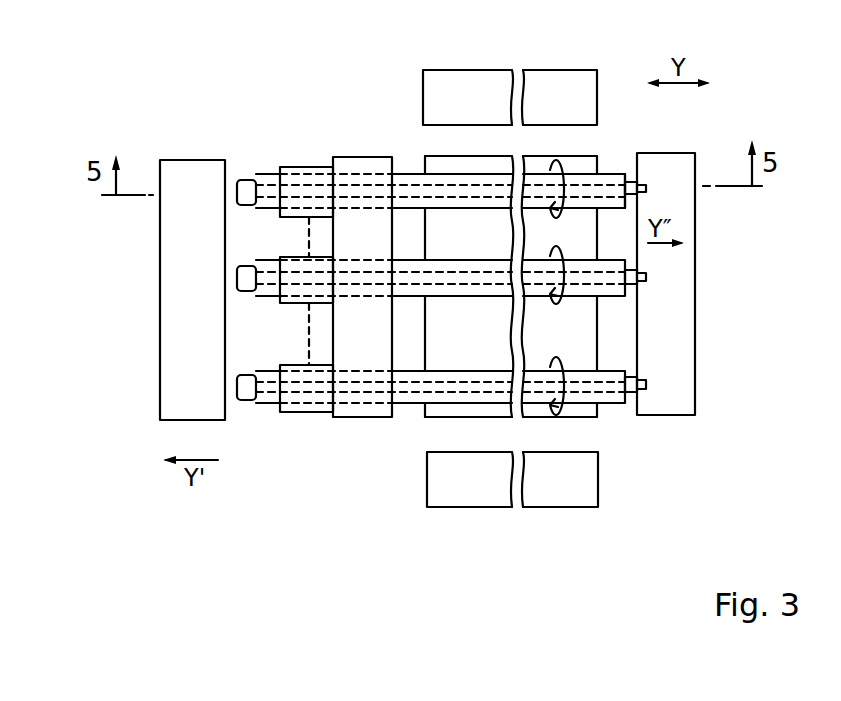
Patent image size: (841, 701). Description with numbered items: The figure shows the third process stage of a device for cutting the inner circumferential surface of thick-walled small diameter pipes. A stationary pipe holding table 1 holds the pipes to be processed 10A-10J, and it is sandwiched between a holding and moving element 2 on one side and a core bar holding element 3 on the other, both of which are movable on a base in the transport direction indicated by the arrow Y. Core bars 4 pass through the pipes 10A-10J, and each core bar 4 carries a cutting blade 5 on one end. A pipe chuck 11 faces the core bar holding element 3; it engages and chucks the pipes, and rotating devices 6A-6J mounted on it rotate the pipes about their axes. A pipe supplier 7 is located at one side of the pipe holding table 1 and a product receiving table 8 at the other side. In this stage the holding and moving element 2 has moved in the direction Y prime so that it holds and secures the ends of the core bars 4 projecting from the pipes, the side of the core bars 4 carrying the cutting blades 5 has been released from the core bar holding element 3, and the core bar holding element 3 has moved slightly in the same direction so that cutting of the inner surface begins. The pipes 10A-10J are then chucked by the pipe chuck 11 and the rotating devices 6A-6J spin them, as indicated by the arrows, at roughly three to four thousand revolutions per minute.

The pipe holding table 1 is at (568, 159).
The holding and moving element 2 is at (670, 157).
The core bar holding element 3 is at (180, 172).
The core bar 4 is at (629, 180).
The cutting blade 5 is at (243, 181).
The rotating device 6A is at (298, 168).
The rotating device 6J is at (290, 366).
The pipe supplier 7 is at (455, 80).
The product receiving table 8 is at (442, 487).
The pipe to be processed 10A is at (612, 201).
The pipe to be processed 10J is at (614, 368).
The pipe chuck 11 is at (362, 165).